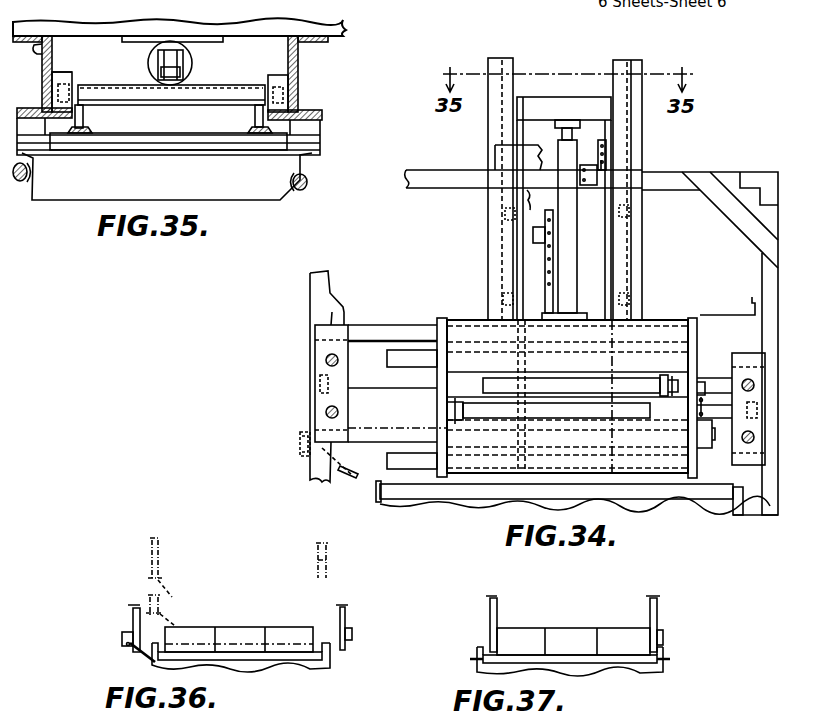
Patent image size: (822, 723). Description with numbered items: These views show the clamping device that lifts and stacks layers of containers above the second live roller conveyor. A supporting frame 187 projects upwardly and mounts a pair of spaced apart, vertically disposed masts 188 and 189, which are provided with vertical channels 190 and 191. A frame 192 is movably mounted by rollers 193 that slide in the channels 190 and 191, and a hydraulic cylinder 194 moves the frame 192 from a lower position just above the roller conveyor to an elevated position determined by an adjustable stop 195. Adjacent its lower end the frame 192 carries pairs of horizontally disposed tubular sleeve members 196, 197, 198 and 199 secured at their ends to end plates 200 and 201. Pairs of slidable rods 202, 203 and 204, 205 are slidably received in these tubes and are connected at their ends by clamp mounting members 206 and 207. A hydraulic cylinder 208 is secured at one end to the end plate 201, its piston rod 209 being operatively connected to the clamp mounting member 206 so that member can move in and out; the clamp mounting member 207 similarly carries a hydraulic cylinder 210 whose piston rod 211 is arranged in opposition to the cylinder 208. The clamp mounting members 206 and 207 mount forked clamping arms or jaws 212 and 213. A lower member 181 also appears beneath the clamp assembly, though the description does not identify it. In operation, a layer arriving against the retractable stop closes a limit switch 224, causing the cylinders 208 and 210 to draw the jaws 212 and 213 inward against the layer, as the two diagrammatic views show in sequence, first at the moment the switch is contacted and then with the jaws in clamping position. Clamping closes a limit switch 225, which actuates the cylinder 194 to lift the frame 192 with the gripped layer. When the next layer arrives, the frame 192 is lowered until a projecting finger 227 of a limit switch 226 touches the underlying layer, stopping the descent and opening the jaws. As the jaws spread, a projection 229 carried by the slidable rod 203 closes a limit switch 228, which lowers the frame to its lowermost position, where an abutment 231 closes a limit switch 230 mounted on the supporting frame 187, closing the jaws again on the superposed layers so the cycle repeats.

In FIG. 34, the bar 181 is at (415, 495).
In FIG. 36, the bar 181 is at (305, 658).
In FIG. 37, the bar 181 is at (570, 661).
In FIG. 35, the supporting frame 187 is at (201, 30).
In FIG. 34, the supporting frame 187 is at (722, 176).
In FIG. 35, the mast 188 is at (52, 50).
In FIG. 34, the mast 188 is at (507, 58).
In FIG. 35, the mast 189 is at (298, 76).
In FIG. 34, the mast 189 is at (634, 60).
In FIG. 35, the vertical channel 190 is at (60, 74).
In FIG. 35, the vertical channel 191 is at (298, 82).
In FIG. 35, the frame 192 is at (197, 96).
In FIG. 34, the frame 192 is at (542, 105).
In FIG. 35, the rollers 193 is at (72, 88).
In FIG. 34, the rollers 193 is at (505, 214).
In FIG. 35, the hydraulic cylinder 194 is at (193, 60).
In FIG. 34, the hydraulic cylinder 194 is at (570, 267).
In FIG. 34, the adjustable stop 195 is at (533, 236).
In FIG. 35, the tubular sleeve member 196 is at (255, 193).
In FIG. 34, the tubular sleeve member 196 is at (655, 320).
In FIG. 34, the tubular sleeve member 197 is at (637, 356).
In FIG. 34, the tubular sleeve member 198 is at (553, 436).
In FIG. 34, the tubular sleeve member 199 is at (618, 462).
In FIG. 34, the end plate 200 is at (437, 398).
In FIG. 34, the end plate 201 is at (697, 320).
In FIG. 35, the slidable rod 202 is at (26, 192).
In FIG. 34, the slidable rod 202 is at (372, 330).
In FIG. 34, the slidable rod 203 is at (380, 428).
In FIG. 34, the slidable rod 204 is at (387, 356).
In FIG. 34, the slidable rod 205 is at (705, 478).
In FIG. 34, the clamp mounting member 206 is at (315, 352).
In FIG. 34, the clamp mounting member 207 is at (752, 353).
In FIG. 34, the hydraulic cylinder 208 is at (540, 385).
In FIG. 34, the piston rod 209 is at (364, 388).
In FIG. 34, the hydraulic cylinder 210 is at (508, 414).
In FIG. 34, the piston rod 211 is at (670, 431).
In FIG. 36, the clamping arm 212 is at (133, 612).
In FIG. 37, the clamping arm 212 is at (497, 610).
In FIG. 36, the clamping arm 213 is at (345, 610).
In FIG. 37, the clamping arm 213 is at (657, 604).
In FIG. 36, the limit switch 224 is at (240, 641).
In FIG. 37, the limit switch 224 is at (573, 641).
In FIG. 36, the limit switch 225 is at (352, 634).
In FIG. 37, the limit switch 225 is at (663, 638).
In FIG. 34, the limit switch 226 is at (298, 440).
In FIG. 36, the limit switch 226 is at (122, 637).
In FIG. 34, the projecting finger 227 is at (342, 478).
In FIG. 36, the projecting finger 227 is at (142, 655).
In FIG. 34, the limit switch 228 is at (710, 386).
In FIG. 34, the projection 229 is at (712, 434).
In FIG. 34, the limit switch 230 is at (590, 185).
In FIG. 34, the abutment 231 is at (604, 166).